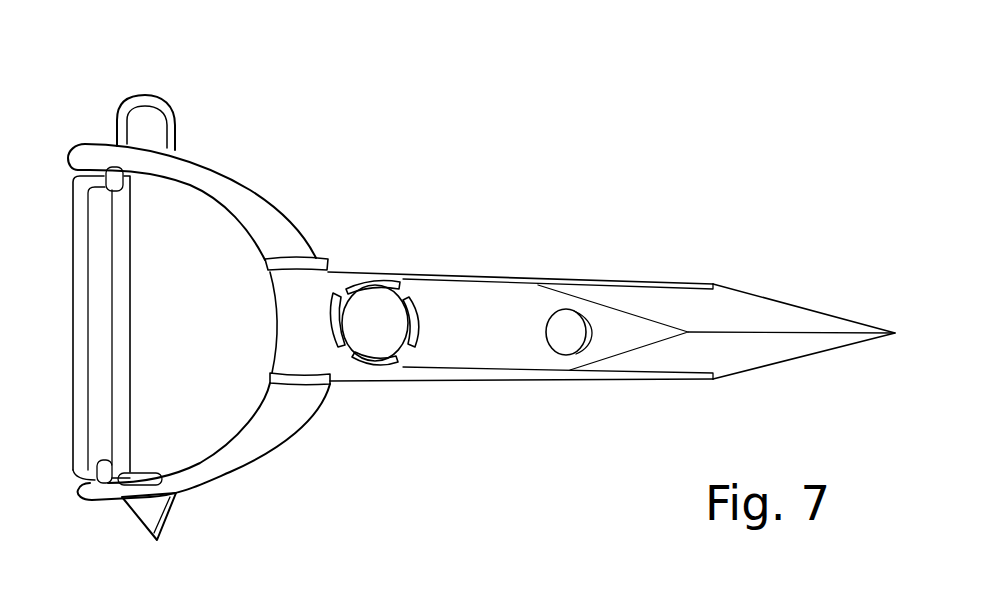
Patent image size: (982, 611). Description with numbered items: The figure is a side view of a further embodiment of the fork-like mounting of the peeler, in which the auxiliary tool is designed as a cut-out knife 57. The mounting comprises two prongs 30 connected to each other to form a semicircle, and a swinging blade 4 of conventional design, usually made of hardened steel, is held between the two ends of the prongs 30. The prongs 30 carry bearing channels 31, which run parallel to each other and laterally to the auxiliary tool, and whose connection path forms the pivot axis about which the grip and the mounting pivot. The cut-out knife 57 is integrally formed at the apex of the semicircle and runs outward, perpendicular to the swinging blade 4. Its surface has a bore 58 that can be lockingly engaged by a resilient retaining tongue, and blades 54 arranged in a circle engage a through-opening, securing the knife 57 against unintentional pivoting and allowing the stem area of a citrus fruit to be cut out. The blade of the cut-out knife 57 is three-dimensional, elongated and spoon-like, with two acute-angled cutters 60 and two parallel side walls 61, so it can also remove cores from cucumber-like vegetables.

The swinging blade 4 is at (122, 312).
The prongs 30 is at (243, 194).
The bearing channels 31 is at (300, 262).
The blades 54 is at (417, 323).
The cut-out knife 57 is at (747, 283).
The bore 58 is at (567, 333).
The acute-angled cutters 60 is at (802, 318).
The parallel side walls 61 is at (665, 279).